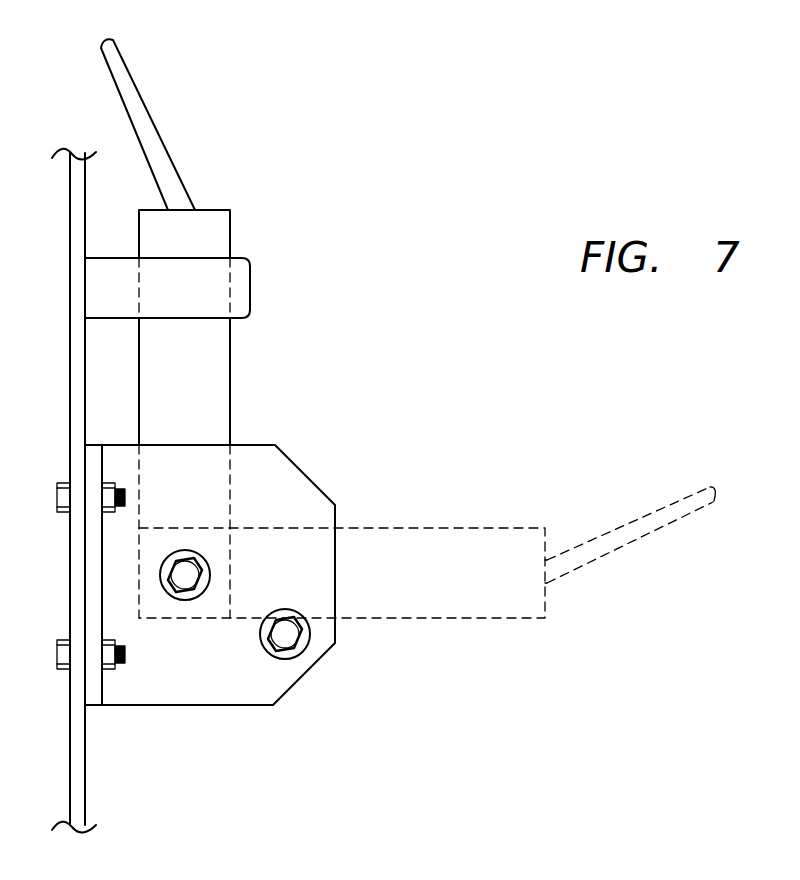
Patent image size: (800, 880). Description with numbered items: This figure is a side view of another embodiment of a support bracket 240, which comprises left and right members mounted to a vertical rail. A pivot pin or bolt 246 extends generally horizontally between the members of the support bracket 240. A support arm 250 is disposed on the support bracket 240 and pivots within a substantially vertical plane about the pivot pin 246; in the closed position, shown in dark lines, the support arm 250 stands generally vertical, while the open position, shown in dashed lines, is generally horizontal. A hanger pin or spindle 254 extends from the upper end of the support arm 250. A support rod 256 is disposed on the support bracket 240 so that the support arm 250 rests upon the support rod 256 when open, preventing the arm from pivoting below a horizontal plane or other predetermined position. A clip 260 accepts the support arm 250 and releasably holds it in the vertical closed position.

The support bracket 240 is at (345, 398).
The pivot pin 246 is at (185, 577).
The support arm 250 is at (203, 377).
The hanger pin 254 is at (148, 128).
The support rod 256 is at (287, 636).
The clip 260 is at (240, 273).